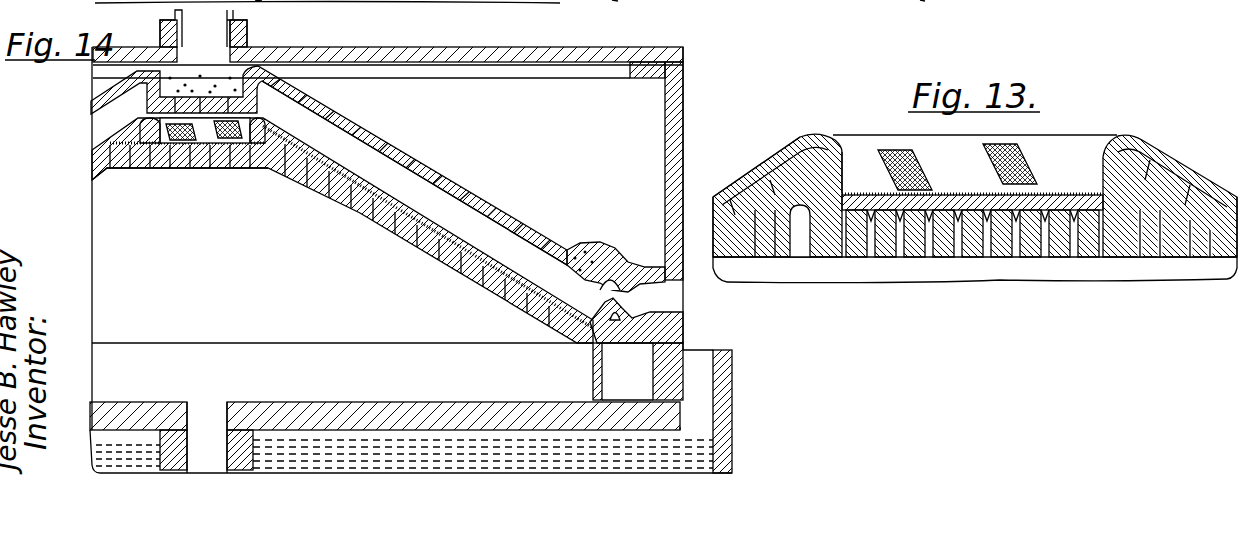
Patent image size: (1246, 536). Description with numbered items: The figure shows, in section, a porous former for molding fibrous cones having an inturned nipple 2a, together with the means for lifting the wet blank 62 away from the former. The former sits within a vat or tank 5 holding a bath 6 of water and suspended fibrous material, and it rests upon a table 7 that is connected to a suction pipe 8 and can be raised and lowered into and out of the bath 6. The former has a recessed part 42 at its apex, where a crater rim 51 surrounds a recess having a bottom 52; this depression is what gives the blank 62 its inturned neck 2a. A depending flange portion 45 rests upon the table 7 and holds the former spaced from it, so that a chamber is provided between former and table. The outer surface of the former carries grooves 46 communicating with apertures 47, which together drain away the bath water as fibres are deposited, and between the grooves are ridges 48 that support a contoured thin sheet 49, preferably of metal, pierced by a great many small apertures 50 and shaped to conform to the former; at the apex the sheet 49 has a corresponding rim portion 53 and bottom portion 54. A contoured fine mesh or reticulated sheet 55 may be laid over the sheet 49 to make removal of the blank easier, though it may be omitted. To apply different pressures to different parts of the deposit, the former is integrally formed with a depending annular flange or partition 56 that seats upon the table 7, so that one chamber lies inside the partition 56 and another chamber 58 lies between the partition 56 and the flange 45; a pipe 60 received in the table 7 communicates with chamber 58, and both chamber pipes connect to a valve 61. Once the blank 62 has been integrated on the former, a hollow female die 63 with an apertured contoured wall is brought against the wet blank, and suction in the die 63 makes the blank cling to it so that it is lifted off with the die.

In FIG. 14, the inturned nipple 2a is at (316, 109).
In FIG. 14, the vat or tank 5 is at (732, 428).
In FIG. 14, the bath 6 is at (683, 453).
In FIG. 13, the table 7 is at (925, 1).
In FIG. 14, the suction pipe 8 is at (618, 1).
In FIG. 14, the recessed part 42 is at (215, 168).
In FIG. 14, the depending flange portion 45 is at (652, 392).
In FIG. 14, the grooves 46 is at (352, 195).
In FIG. 13, the grooves 46 is at (763, 258).
In FIG. 14, the apertures 47 is at (396, 230).
In FIG. 13, the ridges 48 is at (729, 258).
In FIG. 14, the contoured thin sheet 49 is at (313, 152).
In FIG. 13, the contoured thin sheet 49 is at (800, 144).
In FIG. 13, the small apertures 50 is at (913, 258).
In FIG. 13, the crater rim 51 is at (845, 167).
In FIG. 13, the bottom 52 is at (984, 258).
In FIG. 13, the rim portion 53 is at (1141, 134).
In FIG. 13, the bottom portion 54 is at (1060, 183).
In FIG. 13, the fine mesh or reticulated sheet 55 is at (737, 182).
In FIG. 14, the depending annular flange or partition 56 is at (593, 368).
In FIG. 14, the chamber 58 is at (620, 386).
In FIG. 14, the pipe 60 is at (512, 188).
In FIG. 14, the valve 61 is at (262, 1).
In FIG. 14, the blank 62 is at (393, 170).
In FIG. 14, the hollow female die 63 is at (697, 83).